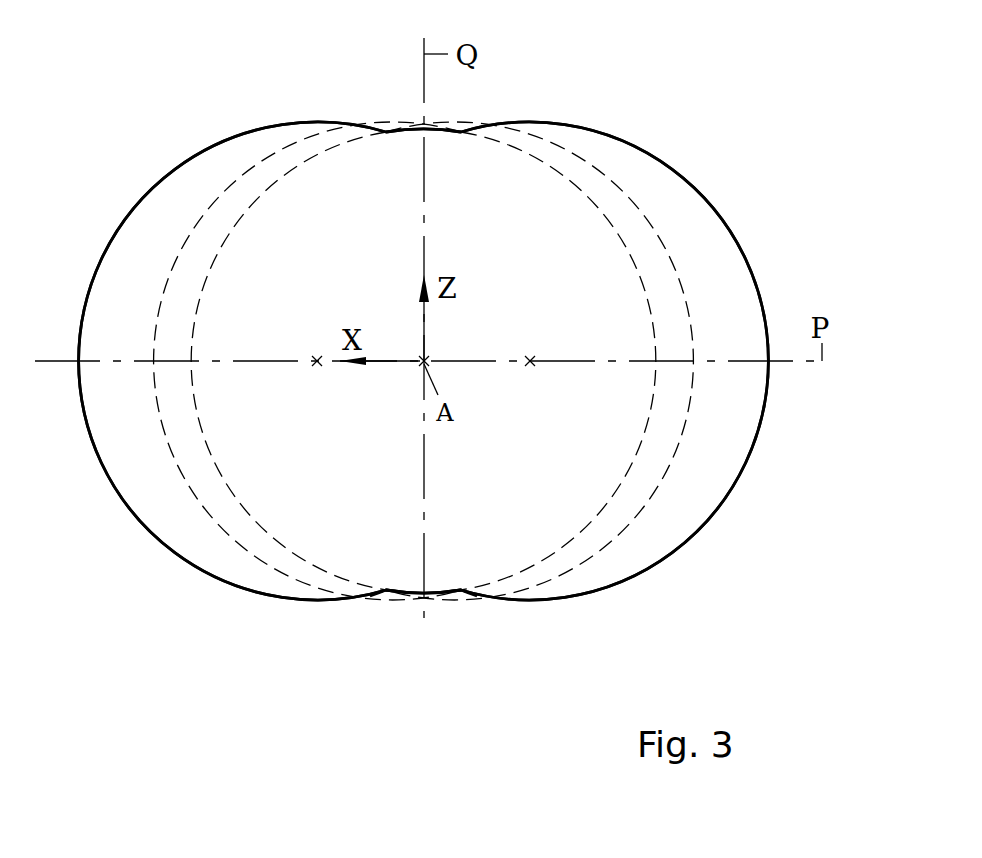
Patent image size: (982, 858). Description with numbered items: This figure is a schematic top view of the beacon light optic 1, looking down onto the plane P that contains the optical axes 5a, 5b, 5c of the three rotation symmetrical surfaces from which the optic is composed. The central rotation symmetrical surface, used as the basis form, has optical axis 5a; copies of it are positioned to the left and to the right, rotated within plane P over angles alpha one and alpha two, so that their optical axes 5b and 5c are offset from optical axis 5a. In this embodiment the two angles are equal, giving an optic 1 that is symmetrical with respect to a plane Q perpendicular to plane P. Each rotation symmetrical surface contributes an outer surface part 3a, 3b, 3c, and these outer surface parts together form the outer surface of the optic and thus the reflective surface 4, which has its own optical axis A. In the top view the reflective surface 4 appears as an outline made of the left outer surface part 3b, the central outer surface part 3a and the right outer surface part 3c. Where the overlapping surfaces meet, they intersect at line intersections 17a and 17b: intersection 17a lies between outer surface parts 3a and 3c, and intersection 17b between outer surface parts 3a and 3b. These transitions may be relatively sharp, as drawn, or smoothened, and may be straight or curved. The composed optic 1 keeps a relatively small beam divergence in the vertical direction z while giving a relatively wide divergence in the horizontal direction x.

The beacon light optic 1 is at (709, 648).
The outer surface part 3a is at (407, 127).
The outer surface part 3b is at (260, 125).
The outer surface part 3c is at (587, 125).
The reflective surface 4 is at (642, 145).
The optical axis 5a is at (424, 364).
The optical axis 5b is at (317, 372).
The optical axis 5c is at (530, 372).
The intersection 17a is at (463, 593).
The intersection 17b is at (385, 593).